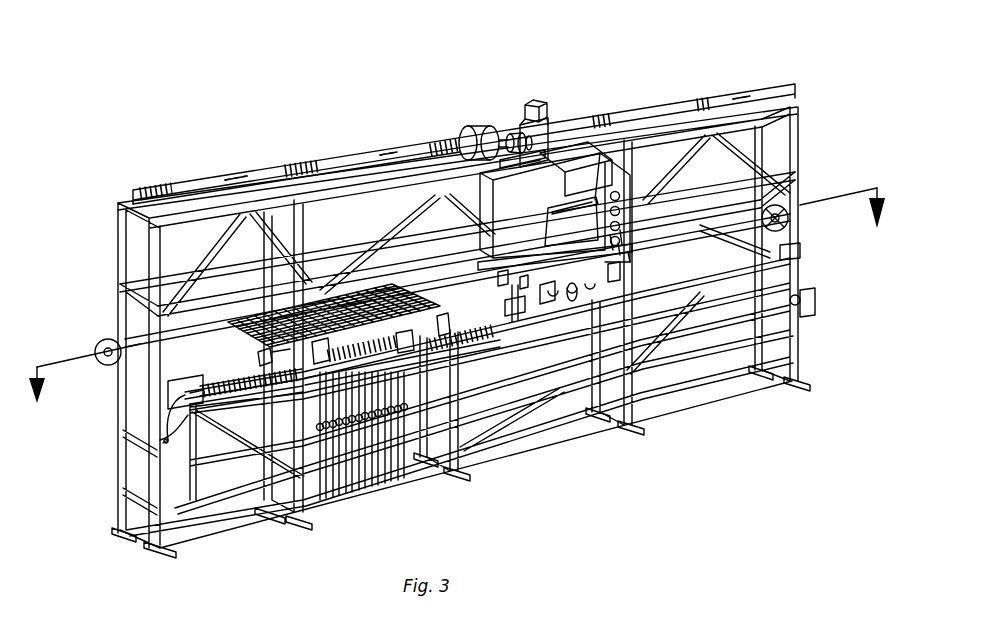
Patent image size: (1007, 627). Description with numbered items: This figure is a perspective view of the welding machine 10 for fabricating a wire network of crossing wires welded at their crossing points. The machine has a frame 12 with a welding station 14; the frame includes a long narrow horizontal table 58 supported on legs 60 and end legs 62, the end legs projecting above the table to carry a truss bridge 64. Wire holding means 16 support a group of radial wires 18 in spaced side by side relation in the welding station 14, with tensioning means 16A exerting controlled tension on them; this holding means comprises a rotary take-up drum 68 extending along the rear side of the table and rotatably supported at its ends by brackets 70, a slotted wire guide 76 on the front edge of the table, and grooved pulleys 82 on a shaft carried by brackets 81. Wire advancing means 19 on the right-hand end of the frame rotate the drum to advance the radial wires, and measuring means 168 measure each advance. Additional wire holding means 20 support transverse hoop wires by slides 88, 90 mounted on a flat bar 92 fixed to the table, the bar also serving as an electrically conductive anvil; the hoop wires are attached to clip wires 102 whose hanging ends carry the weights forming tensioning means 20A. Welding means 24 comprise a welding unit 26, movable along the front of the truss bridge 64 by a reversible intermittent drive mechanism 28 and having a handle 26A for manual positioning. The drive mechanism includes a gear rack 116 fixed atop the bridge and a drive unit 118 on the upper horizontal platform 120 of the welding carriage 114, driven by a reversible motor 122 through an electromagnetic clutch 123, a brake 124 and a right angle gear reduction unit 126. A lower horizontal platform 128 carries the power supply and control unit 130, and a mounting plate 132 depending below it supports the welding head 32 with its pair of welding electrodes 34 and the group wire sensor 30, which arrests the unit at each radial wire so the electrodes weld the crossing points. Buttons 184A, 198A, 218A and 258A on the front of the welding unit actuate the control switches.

The welding machine 10 is at (298, 95).
The frame 12 is at (115, 430).
The welding station 14 is at (365, 336).
The wire holding means 16 is at (378, 368).
The tensioning means 16A is at (408, 425).
The group wires 18 is at (356, 500).
The wire advancing means 19 is at (758, 242).
The additional wire holding means 20 is at (254, 344).
The hoop wire tensioning means 20A is at (160, 441).
The welding means 24 is at (578, 138).
The welding unit 26 is at (626, 248).
The handle 26A is at (617, 282).
The intermittent drive mechanism 28 is at (462, 130).
The group wire sensor 30 is at (503, 306).
The welding head 32 is at (548, 305).
The welding electrodes 34 is at (514, 320).
The table 58 is at (712, 257).
The legs 60 is at (280, 472).
The end legs 62 is at (120, 528).
The truss bridge 64 is at (245, 211).
The take-up drum 68 is at (104, 338).
The brackets 70 is at (111, 366).
The wire guide 76 is at (192, 384).
The brackets 81 is at (205, 425).
The pulleys 82 is at (222, 377).
The slide 88 is at (443, 315).
The slide 90 is at (256, 352).
The flat bar 92 is at (796, 249).
The clip wires 102 is at (170, 432).
The welding carriage 114 is at (442, 158).
The gear rack 116 is at (190, 186).
The drive unit 118 is at (540, 97).
The upper horizontal platform 120 is at (503, 162).
The reversible motor 122 is at (467, 127).
The electromagnetic clutch 123 is at (508, 133).
The brake 124 is at (521, 132).
The right angle gear reduction unit 126 is at (560, 117).
The lower horizontal platform 128 is at (572, 302).
The power supply and control unit 130 is at (597, 200).
The mounting plate 132 is at (490, 272).
The measuring means 168 is at (810, 306).
The button 184A is at (620, 230).
The button 198A is at (618, 243).
The button 218A is at (610, 235).
The button 258A is at (628, 252).